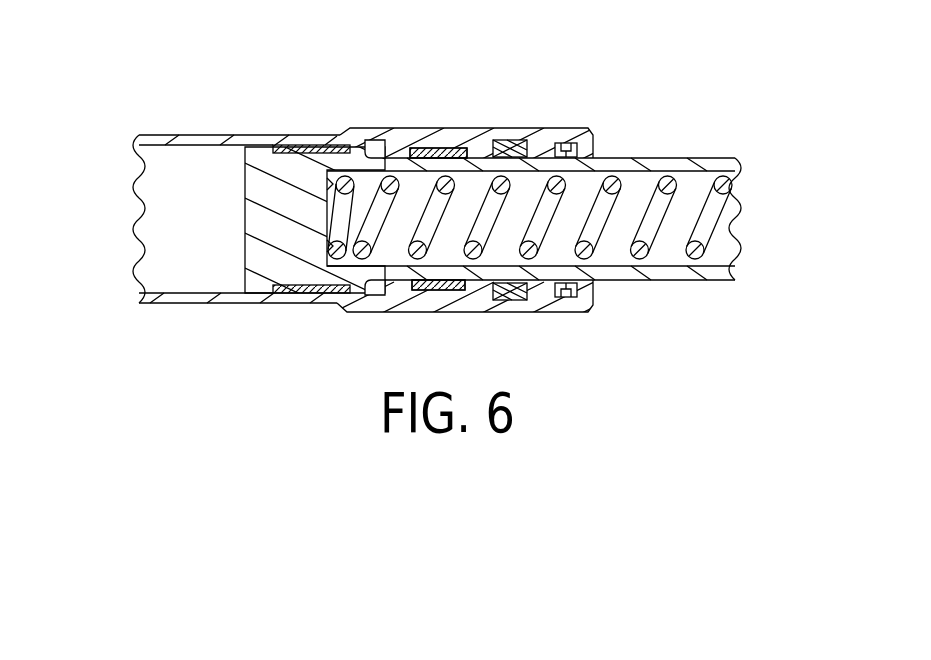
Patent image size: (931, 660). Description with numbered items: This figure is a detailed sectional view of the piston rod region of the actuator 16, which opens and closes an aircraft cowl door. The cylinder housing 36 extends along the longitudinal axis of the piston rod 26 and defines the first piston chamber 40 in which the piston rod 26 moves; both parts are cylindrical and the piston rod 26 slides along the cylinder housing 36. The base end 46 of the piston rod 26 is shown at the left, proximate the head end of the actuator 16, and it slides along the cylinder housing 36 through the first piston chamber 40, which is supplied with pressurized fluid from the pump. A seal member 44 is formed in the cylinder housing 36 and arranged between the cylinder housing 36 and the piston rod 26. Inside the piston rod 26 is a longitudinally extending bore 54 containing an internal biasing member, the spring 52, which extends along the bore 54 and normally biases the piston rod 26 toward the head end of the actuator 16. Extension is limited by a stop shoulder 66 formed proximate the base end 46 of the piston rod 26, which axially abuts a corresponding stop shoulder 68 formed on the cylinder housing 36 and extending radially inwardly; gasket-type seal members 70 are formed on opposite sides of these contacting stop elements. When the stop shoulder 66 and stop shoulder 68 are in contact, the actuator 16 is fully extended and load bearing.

The actuator 16 is at (250, 92).
The first piston chamber 40 is at (180, 165).
The base end 46 is at (290, 157).
The cylinder housing 36 is at (422, 133).
The stop shoulder 66 is at (363, 152).
The stop shoulder 68 is at (404, 148).
The gasket-type seal members 70 is at (450, 291).
The seal member 44 is at (564, 150).
The piston rod 26 is at (621, 163).
The bore 54 is at (723, 261).
The spring 52 is at (729, 208).